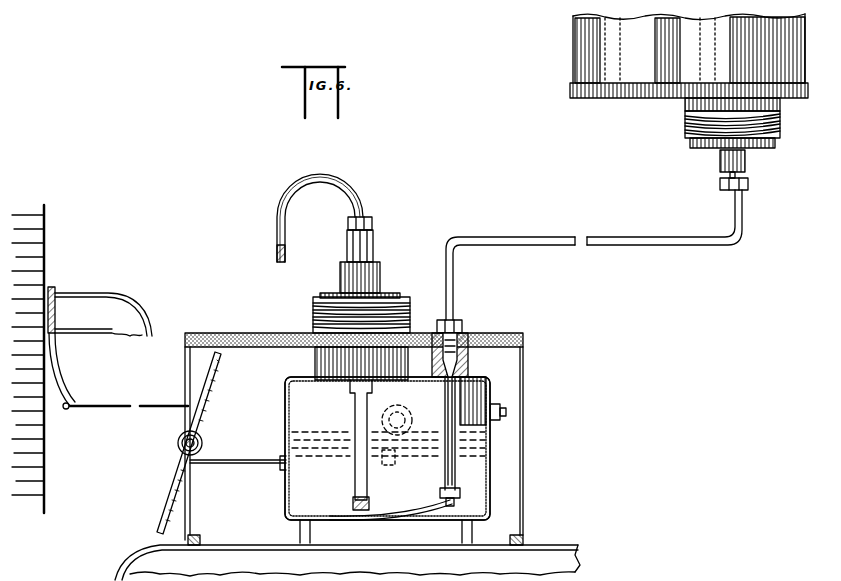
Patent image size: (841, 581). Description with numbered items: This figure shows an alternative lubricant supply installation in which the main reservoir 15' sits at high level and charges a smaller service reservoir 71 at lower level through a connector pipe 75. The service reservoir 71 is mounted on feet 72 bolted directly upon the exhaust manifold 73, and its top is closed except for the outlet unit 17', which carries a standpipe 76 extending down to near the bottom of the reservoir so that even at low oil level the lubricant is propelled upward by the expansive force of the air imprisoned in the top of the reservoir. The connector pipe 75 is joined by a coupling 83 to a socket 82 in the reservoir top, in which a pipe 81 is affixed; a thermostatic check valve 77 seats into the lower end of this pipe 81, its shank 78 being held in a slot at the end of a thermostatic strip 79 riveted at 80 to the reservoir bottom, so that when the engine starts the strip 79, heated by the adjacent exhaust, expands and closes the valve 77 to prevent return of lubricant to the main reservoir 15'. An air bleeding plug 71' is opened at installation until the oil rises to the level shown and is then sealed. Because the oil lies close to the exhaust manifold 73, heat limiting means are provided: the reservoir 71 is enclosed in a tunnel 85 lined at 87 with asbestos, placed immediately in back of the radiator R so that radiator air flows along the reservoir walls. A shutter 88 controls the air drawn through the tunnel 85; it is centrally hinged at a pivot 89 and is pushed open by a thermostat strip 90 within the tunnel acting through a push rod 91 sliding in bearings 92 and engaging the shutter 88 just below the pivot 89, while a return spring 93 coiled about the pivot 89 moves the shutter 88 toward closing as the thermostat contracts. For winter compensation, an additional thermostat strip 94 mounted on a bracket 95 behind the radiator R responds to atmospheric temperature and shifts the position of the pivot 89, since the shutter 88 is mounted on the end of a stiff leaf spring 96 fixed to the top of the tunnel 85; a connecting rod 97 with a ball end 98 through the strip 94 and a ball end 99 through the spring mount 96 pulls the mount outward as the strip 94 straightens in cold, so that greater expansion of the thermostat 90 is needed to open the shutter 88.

The radiator R is at (45, 470).
The bracket 95 is at (101, 292).
The thermostat strip 94 is at (62, 360).
The ball end 98 is at (66, 411).
The connecting rod 97 is at (116, 409).
The tunnel 85 is at (505, 333).
The leaf spring 96 is at (185, 373).
The push rod 91 is at (250, 464).
The bearings 92 is at (285, 480).
The service reservoir 71 is at (418, 448).
The pipe 81 is at (491, 451).
The air bleeding plug 71' is at (505, 401).
The outlet unit 17' is at (343, 277).
The lining 87 is at (254, 346).
The standpipe 76 is at (354, 405).
The thermostat strip 90 is at (400, 414).
The connector pipe 75 is at (558, 237).
The coupling 83 is at (463, 329).
The socket 82 is at (469, 361).
The thermostatic check valve 77 is at (441, 488).
The thermostatic strip 79 is at (408, 506).
The shank 78 is at (450, 520).
The feet 72 is at (473, 531).
The exhaust manifold 73 is at (538, 545).
The rivet 80 is at (330, 521).
The ball end 99 is at (200, 405).
The shutter 88 is at (166, 495).
The return spring 93 is at (178, 446).
The pivot 89 is at (203, 445).
The main reservoir 15' is at (671, 102).